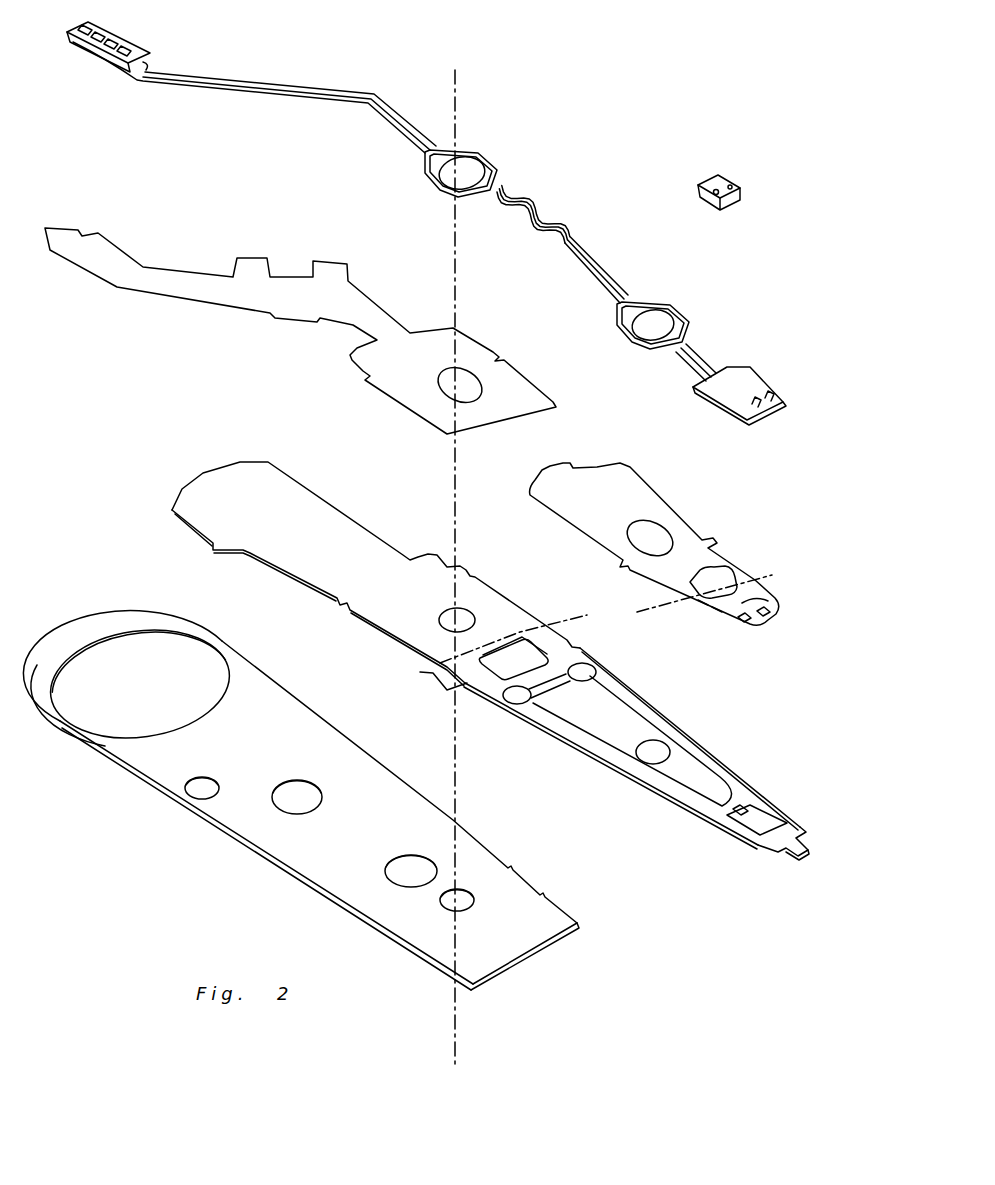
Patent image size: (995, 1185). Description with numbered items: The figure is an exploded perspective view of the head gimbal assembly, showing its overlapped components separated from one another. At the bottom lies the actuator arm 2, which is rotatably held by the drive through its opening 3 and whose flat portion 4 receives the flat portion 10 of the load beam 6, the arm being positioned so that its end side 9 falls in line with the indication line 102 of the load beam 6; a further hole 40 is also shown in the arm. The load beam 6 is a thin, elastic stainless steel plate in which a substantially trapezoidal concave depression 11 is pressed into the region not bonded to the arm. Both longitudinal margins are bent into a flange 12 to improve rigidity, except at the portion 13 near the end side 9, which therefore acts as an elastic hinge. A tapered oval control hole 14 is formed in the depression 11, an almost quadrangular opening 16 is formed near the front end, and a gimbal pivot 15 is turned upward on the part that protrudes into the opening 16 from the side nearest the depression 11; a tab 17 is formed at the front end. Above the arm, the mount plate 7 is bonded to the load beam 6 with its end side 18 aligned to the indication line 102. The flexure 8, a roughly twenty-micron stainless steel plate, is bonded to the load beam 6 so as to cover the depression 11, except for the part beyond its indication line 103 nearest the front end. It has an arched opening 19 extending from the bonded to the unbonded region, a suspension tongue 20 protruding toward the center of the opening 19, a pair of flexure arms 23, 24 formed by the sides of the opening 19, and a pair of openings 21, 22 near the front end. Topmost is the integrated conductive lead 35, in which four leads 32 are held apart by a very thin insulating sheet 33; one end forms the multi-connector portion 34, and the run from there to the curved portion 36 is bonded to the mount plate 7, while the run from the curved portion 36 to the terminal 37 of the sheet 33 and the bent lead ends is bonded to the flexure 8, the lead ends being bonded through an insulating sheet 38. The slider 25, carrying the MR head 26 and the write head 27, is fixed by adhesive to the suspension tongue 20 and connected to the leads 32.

The actuator arm 2 is at (161, 824).
The opening 3 is at (155, 660).
The flat portion 4 is at (287, 850).
The end side 9 is at (524, 960).
The base plate hole 40 is at (447, 903).
The load beam 6 is at (601, 781).
The flat portion 10 is at (340, 541).
The concave depression 11 is at (605, 706).
The flange 12 is at (725, 764).
The portion 13 is at (430, 688).
The control hole 14 is at (670, 746).
The gimbal pivot 15 is at (745, 806).
The opening 16 is at (750, 824).
The tab 17 is at (787, 855).
The indication line 102 is at (572, 614).
The mount plate 7 is at (437, 340).
The end side 18 is at (543, 401).
The flexure 8 is at (686, 490).
The indication line 103 is at (758, 582).
The arched opening 19 is at (703, 606).
The suspension tongue 20 is at (769, 599).
The opening 21 is at (757, 632).
The opening 22 is at (782, 618).
The flexure arm 23 is at (714, 624).
The flexure arm 24 is at (764, 583).
The integrated conductive lead 35 is at (657, 287).
The multi-connector portion 34 is at (130, 52).
The curved portion 36 is at (527, 197).
The lead 32 is at (596, 262).
The insulating sheet 33 is at (694, 337).
The terminal 37 is at (724, 358).
The insulating sheet 38 is at (760, 418).
The slider 25 is at (737, 211).
The MR head 26 is at (702, 200).
The write head 27 is at (738, 186).